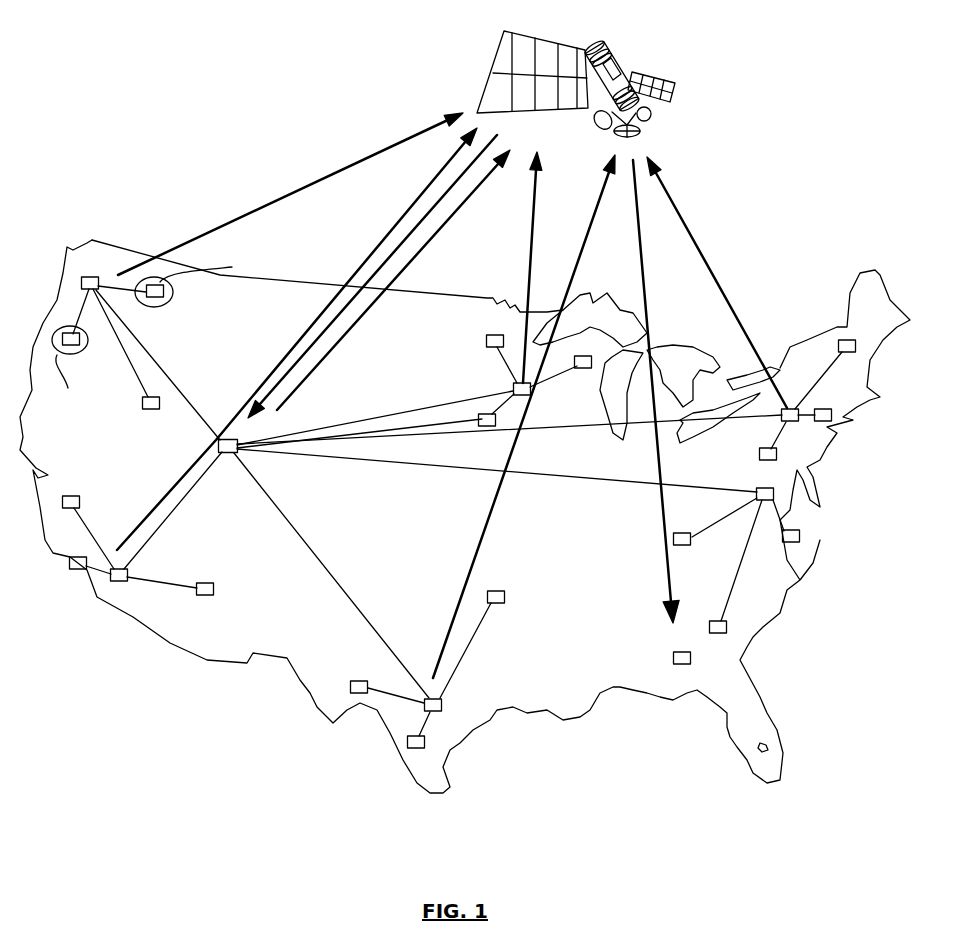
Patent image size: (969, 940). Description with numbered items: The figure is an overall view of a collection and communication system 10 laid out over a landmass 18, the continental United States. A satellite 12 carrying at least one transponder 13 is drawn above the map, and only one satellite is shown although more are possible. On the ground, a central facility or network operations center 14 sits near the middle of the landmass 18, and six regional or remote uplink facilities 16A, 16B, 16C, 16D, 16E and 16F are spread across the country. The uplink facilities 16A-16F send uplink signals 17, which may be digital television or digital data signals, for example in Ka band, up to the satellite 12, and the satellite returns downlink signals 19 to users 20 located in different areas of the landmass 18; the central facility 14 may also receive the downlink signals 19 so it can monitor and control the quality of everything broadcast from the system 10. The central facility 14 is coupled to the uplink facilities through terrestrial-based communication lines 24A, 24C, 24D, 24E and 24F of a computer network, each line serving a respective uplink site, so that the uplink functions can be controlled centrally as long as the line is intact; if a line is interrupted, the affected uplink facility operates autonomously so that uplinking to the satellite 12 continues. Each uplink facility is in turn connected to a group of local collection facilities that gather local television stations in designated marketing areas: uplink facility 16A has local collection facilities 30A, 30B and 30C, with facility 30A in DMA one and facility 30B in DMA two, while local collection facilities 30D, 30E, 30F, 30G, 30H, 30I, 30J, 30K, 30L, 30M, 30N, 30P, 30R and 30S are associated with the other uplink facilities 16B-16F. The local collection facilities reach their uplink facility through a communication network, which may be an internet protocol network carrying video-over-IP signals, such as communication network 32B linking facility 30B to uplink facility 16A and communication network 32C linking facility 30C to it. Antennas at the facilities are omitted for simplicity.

The collection and communication system 10 is at (125, 157).
The satellite 12 is at (617, 63).
The transponder 13 is at (618, 60).
The central facility or network operations center 14 is at (229, 455).
The regional or remote uplink facility 16A is at (86, 273).
The regional or remote uplink facility 16B is at (119, 582).
The regional or remote uplink facility 16C is at (513, 387).
The regional or remote uplink facility 16D is at (800, 410).
The regional or remote uplink facility 16E is at (757, 488).
The regional or remote uplink facility 16F is at (443, 702).
The uplink signal 17 is at (282, 195).
The landmass 18 is at (775, 750).
The downlink signal 19 is at (430, 207).
The user 20 is at (680, 652).
The communication line 24A is at (150, 355).
The communication line 24C is at (377, 418).
The communication line 24D is at (566, 430).
The communication line 24E is at (575, 480).
The communication line 24F is at (306, 545).
The local collection facility 30A is at (88, 338).
The local collection facility 30B is at (172, 292).
The local collection facility 30C is at (151, 411).
The local collection facility 30D is at (78, 495).
The local collection facility 30E is at (212, 595).
The local collection facility 30F is at (70, 570).
The local collection facility 30G is at (487, 341).
The local collection facility 30H is at (580, 370).
The local collection facility 30I is at (487, 427).
The local collection facility 30J is at (360, 680).
The local collection facility 30K is at (503, 590).
The local collection facility 30L is at (407, 742).
The local collection facility 30M is at (838, 345).
The local collection facility 30N is at (824, 423).
The local collection facility 30P is at (760, 455).
The local collection facility 30R is at (728, 627).
The local collection facility 30S is at (684, 545).
The communication network 32B is at (112, 278).
The communication network 32C is at (143, 383).